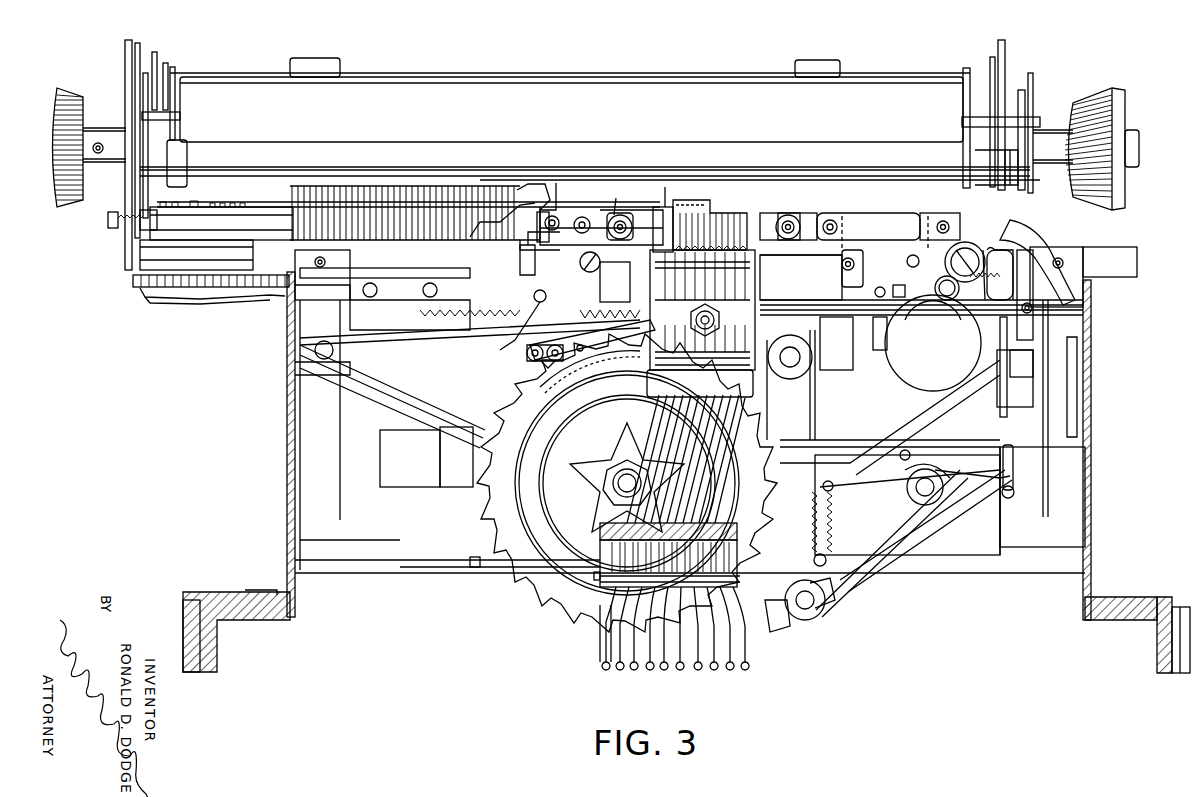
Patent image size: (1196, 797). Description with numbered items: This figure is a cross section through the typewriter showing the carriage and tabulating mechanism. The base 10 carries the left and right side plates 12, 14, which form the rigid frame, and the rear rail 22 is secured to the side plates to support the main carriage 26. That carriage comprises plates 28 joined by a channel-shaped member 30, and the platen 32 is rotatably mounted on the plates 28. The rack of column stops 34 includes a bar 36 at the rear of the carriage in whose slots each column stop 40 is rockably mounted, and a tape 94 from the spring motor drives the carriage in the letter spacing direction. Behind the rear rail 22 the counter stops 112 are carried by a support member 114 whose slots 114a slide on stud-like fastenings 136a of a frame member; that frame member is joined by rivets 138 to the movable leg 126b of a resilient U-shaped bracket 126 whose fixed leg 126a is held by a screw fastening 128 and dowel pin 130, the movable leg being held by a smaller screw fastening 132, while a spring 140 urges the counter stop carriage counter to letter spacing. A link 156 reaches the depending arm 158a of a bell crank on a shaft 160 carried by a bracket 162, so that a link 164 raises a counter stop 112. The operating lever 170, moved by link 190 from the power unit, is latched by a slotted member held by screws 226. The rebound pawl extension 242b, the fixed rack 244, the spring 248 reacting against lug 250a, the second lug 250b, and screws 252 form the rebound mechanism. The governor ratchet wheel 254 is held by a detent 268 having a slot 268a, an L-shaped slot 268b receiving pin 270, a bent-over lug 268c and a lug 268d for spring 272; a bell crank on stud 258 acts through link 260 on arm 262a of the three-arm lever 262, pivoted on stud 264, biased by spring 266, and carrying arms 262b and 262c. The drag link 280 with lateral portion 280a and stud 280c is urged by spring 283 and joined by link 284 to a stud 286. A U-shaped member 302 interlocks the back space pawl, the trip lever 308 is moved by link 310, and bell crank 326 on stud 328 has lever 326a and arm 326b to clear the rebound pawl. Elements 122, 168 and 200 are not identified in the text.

The base 10 is at (1175, 648).
The left side plate 12 is at (1090, 387).
The right side plate 14 is at (286, 371).
The rear carriage rail 22 is at (1123, 262).
The main carriage 26 is at (96, 231).
The carriage plates 28 is at (138, 250).
The channel-shaped member 30 is at (135, 277).
The platen 32 is at (530, 84).
The rack of column stops 34 is at (328, 188).
The bar 36 is at (114, 213).
The column stop 40 is at (392, 188).
The tape 94 is at (262, 301).
The counter stop 112 is at (717, 240).
The support member 114 is at (653, 207).
The slots 114a is at (616, 198).
The drive wheel hub 122 is at (650, 391).
The U-shaped bracket member 126 is at (950, 373).
The leg of U-shaped bracket 126a is at (948, 222).
The movable leg of U-shaped bracket 126b is at (857, 263).
The screw fastening 128 is at (965, 248).
The dowel pin 130 is at (1008, 244).
The screw fastening 132 is at (853, 253).
The stud-like fastenings 136a is at (622, 218).
The rivets 138 is at (875, 292).
The spring 140 is at (600, 332).
The link 156 is at (645, 668).
The depending arm 158a is at (603, 648).
The shaft 160 is at (598, 578).
The bracket 162 is at (600, 548).
The link 164 is at (740, 460).
The comb guide 168 is at (740, 220).
The operating lever 170 is at (842, 278).
The link 190 is at (1030, 323).
The ribbon carrier plate 200 is at (558, 183).
The screws 226 is at (665, 187).
The extension of rebound pawl 242b is at (510, 318).
The fixed rack 244 is at (517, 188).
The spring 248 is at (528, 256).
The lug 250a is at (580, 252).
The second lug 250b is at (540, 206).
The screws 252 is at (575, 216).
The ratchet wheel 254 is at (520, 595).
The stud 258 is at (1005, 423).
The link 260 is at (1003, 462).
The three-arm lever 262 is at (888, 524).
The arm of three-arm lever 262a is at (950, 500).
The second arm of three-arm lever 262b is at (930, 570).
The third arm of three-arm lever 262c is at (866, 485).
The stud 264 is at (950, 515).
The spring 266 is at (778, 520).
The detent 268 is at (885, 582).
The longitudinally extending slot 268a is at (910, 505).
The L-shaped slot 268b is at (835, 620).
The bent-over lug 268c is at (793, 640).
The lug 268d is at (835, 568).
The pin 270 is at (808, 625).
The spring 272 is at (833, 500).
The drag link 280 is at (855, 220).
The lateral extending portion 280a is at (675, 205).
The rearwardly extending stud 280c is at (937, 231).
The spring 283 is at (983, 250).
The link 284 is at (855, 257).
The stud 286 is at (843, 213).
The U-shaped member 302 is at (640, 373).
The clutch knockout lever 308 is at (808, 372).
The link 310 is at (788, 370).
The bell crank 326 is at (500, 332).
The lever 326a is at (548, 368).
The arm 326b is at (500, 264).
The stud 328 is at (546, 297).